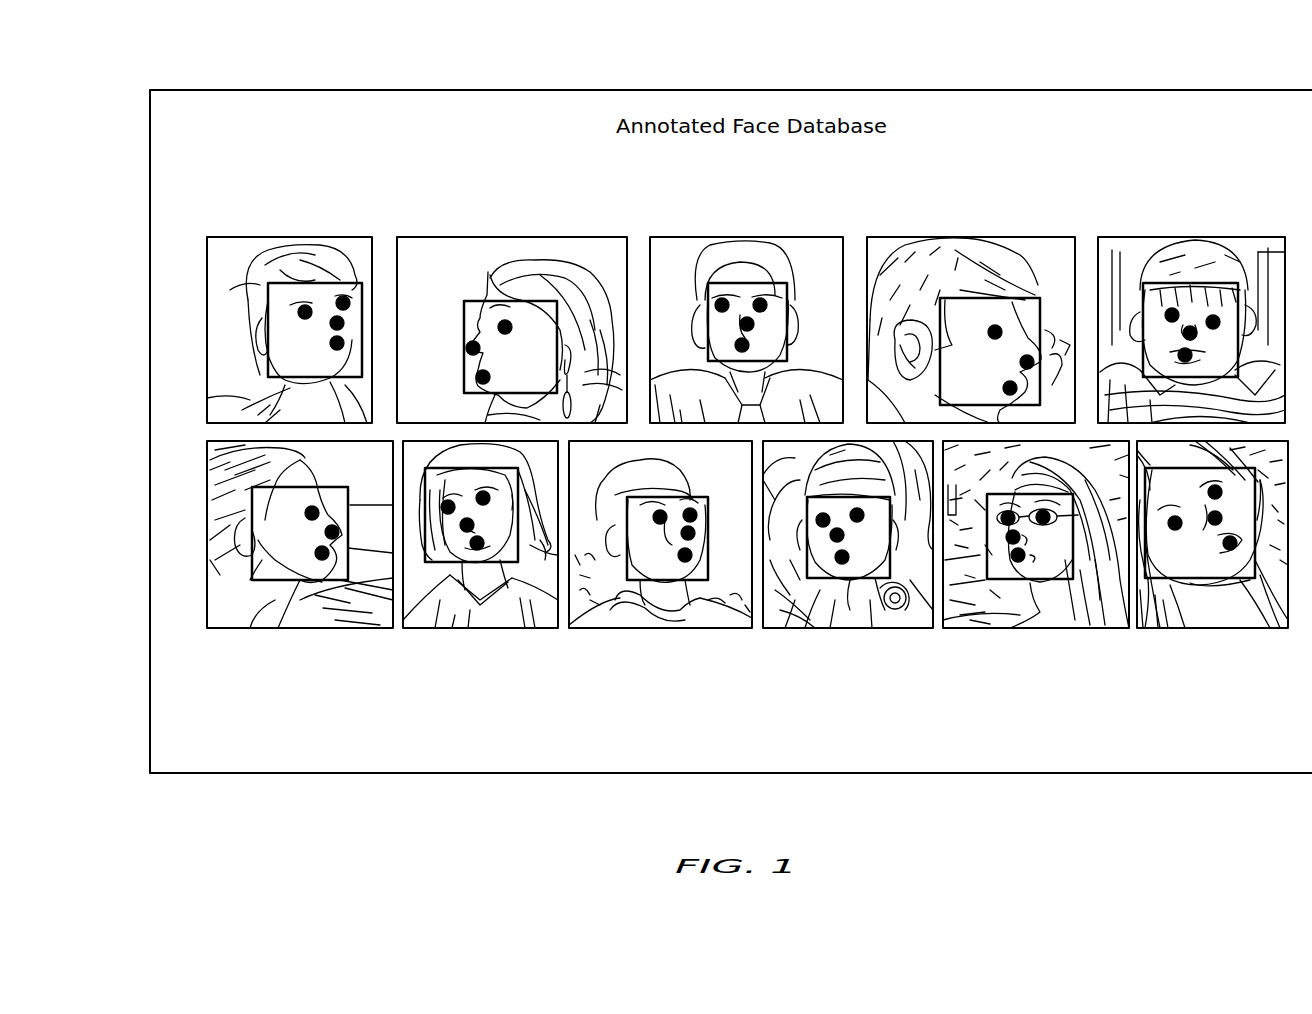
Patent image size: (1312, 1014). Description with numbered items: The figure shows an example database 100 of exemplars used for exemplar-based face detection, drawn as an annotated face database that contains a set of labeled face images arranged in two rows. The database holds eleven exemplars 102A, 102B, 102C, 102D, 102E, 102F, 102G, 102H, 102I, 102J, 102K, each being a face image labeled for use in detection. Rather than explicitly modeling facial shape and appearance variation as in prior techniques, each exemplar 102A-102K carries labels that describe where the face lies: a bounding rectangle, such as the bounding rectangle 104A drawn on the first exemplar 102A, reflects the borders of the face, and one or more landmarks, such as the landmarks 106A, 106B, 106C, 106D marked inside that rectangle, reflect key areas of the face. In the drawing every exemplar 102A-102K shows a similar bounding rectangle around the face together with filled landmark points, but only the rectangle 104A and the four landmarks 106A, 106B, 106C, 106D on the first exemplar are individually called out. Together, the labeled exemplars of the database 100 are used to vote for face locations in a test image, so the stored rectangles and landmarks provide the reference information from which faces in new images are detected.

The database of exemplars 100 is at (928, 90).
The exemplar 102A is at (308, 291).
The exemplar 102B is at (520, 237).
The exemplar 102C is at (740, 237).
The exemplar 102D is at (972, 237).
The exemplar 102E is at (1195, 237).
The exemplar 102F is at (307, 630).
The exemplar 102G is at (495, 630).
The exemplar 102H is at (667, 630).
The exemplar 102I is at (857, 628).
The exemplar 102J is at (1047, 628).
The exemplar 102K is at (1217, 628).
The bounding rectangle 104A is at (360, 283).
The landmark 106A is at (230, 282).
The landmark 106B is at (318, 400).
The landmark 106C is at (366, 350).
The landmark 106D is at (362, 312).